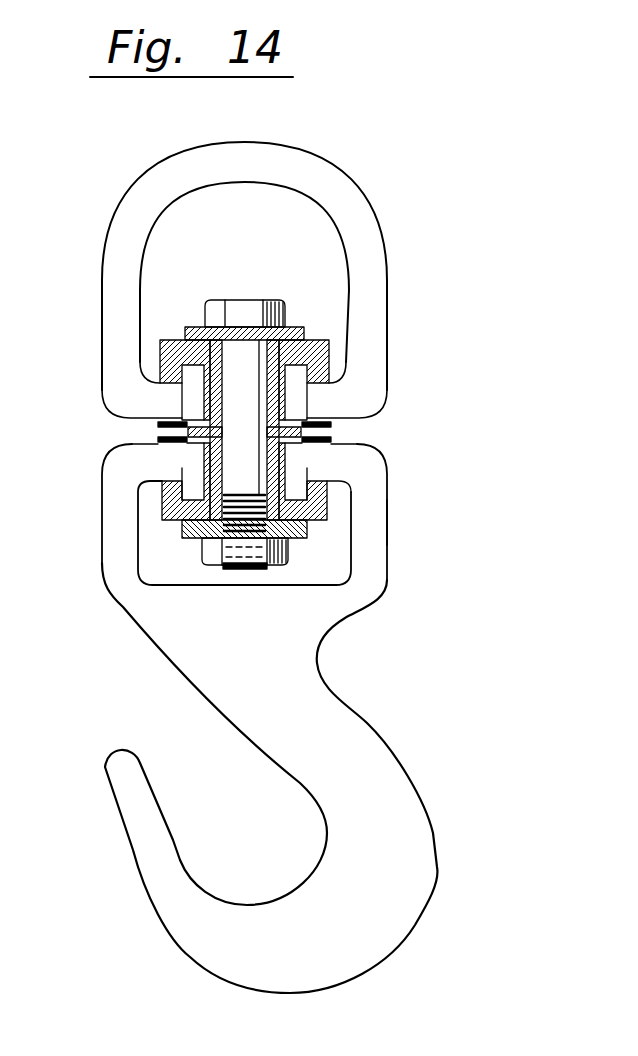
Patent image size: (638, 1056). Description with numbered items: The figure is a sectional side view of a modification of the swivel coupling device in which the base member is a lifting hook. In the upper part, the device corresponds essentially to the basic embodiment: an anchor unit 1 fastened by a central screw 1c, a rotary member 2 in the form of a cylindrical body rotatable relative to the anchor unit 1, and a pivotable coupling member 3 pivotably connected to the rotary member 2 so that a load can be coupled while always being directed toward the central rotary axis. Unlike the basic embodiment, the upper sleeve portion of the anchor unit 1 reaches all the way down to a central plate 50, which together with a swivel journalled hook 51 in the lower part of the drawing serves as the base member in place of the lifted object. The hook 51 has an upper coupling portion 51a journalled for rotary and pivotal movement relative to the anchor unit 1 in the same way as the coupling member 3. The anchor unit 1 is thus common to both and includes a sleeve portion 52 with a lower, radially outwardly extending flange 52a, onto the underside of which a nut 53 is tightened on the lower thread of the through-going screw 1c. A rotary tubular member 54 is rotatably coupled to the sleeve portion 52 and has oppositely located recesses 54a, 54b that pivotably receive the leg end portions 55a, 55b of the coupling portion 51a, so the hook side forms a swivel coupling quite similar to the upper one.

The anchor unit 1 is at (253, 376).
The central screw 1c is at (233, 310).
The rotary member 2 is at (333, 373).
The pivotable coupling member 3 is at (333, 197).
The central plate 50 is at (305, 422).
The hook 51 is at (357, 744).
The upper coupling portion 51a is at (396, 522).
The sleeve portion 52 is at (305, 468).
The radially outwardly extending flange 52a is at (305, 528).
The nut 53 is at (287, 555).
The rotary tubular member 54 is at (318, 507).
The recess 54a is at (176, 462).
The recess 54b is at (325, 482).
The leg end portion 55a is at (176, 466).
The leg end portion 55b is at (330, 448).